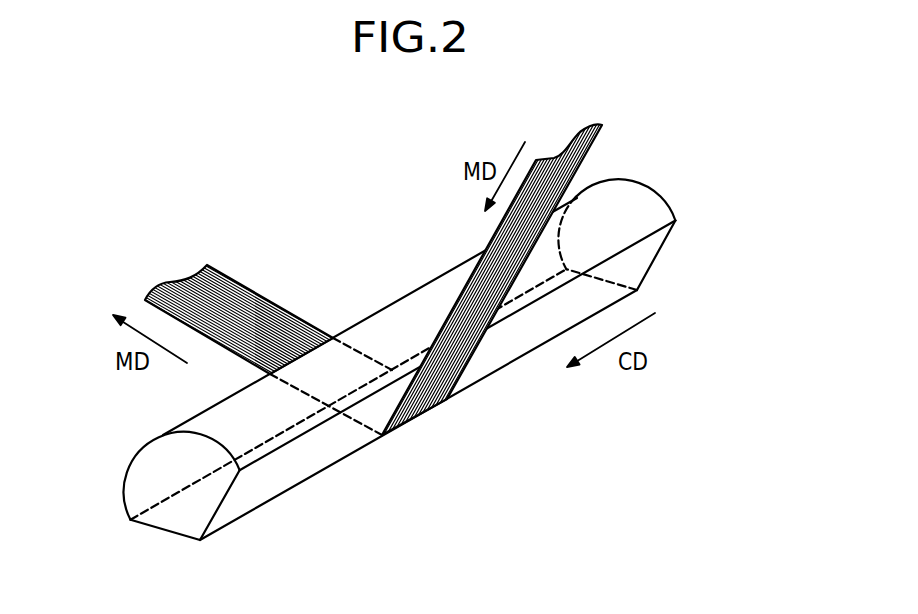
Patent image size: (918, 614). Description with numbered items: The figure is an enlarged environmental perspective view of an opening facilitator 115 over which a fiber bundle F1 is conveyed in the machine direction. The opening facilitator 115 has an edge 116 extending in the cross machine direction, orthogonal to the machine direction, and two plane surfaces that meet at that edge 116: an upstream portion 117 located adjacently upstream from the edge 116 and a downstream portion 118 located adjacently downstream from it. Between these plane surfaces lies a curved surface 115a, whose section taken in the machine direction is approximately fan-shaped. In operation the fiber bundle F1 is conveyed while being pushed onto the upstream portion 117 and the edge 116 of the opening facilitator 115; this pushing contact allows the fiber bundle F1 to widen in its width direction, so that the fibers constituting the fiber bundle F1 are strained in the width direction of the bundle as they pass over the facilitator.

The opening facilitator 115 is at (686, 178).
The curved surface 115a is at (603, 204).
The edge 116 is at (328, 496).
The upstream portion 117 is at (247, 495).
The downstream portion 118 is at (183, 515).
The fiber bundle F1 is at (207, 283).